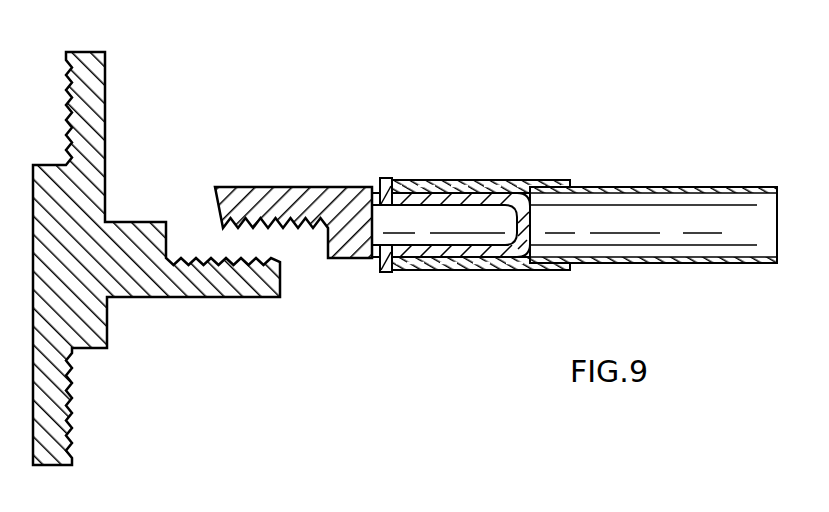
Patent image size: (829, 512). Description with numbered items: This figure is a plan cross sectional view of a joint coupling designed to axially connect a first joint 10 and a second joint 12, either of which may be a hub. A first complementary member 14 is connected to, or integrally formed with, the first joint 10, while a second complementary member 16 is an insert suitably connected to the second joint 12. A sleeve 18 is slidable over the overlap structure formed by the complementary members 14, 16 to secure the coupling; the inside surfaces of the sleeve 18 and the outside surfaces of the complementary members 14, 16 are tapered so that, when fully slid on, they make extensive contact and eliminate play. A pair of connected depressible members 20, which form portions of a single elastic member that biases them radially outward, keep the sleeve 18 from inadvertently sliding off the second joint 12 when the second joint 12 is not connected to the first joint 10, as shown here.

The first joint 10 is at (123, 298).
The second joint 12 is at (637, 187).
The first complementary member 14 is at (105, 143).
The second complementary member 16 is at (261, 191).
The sleeve 18 is at (470, 180).
The depressible members 20 is at (383, 178).